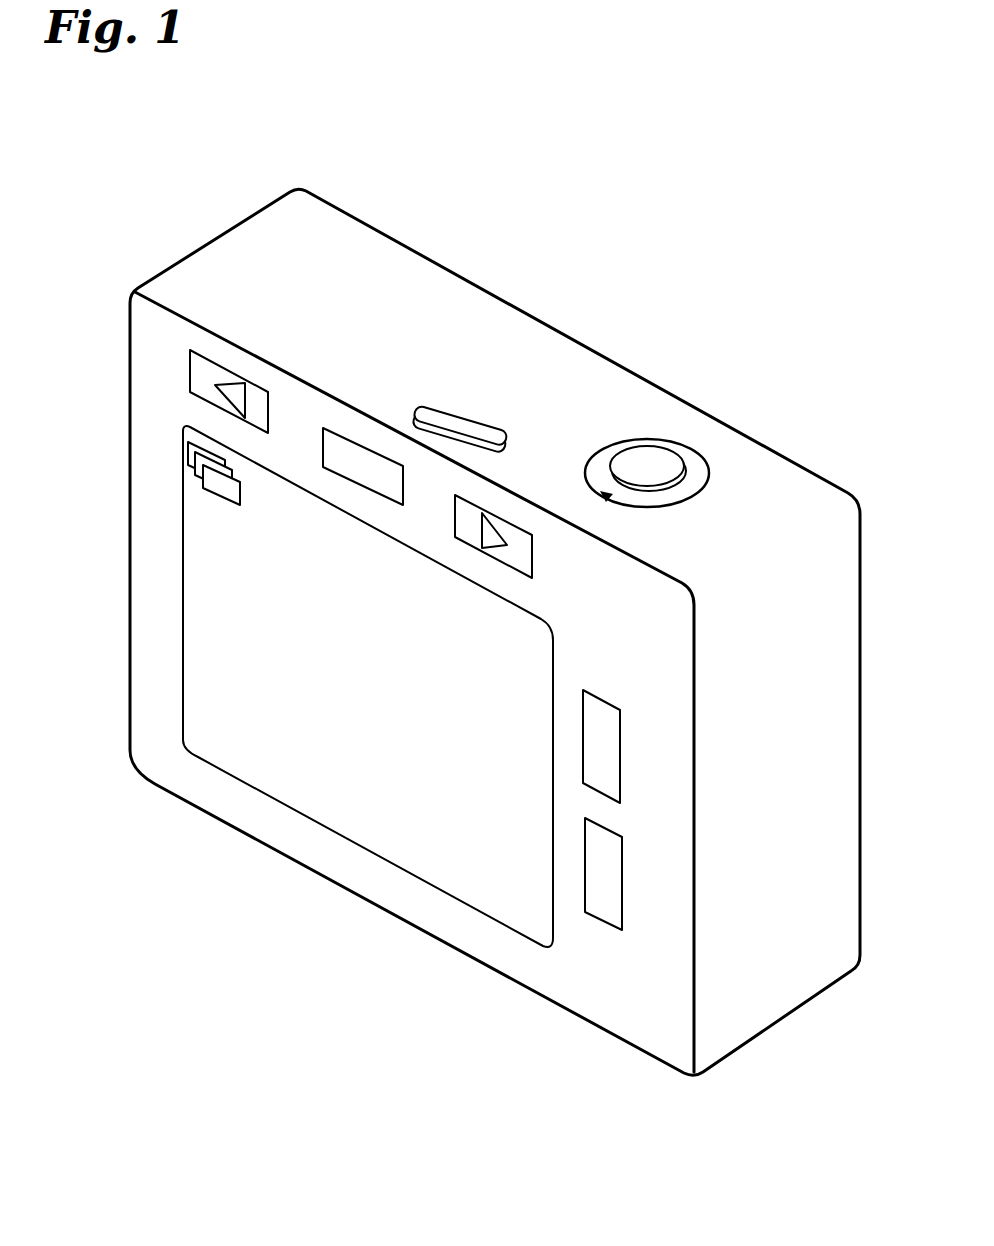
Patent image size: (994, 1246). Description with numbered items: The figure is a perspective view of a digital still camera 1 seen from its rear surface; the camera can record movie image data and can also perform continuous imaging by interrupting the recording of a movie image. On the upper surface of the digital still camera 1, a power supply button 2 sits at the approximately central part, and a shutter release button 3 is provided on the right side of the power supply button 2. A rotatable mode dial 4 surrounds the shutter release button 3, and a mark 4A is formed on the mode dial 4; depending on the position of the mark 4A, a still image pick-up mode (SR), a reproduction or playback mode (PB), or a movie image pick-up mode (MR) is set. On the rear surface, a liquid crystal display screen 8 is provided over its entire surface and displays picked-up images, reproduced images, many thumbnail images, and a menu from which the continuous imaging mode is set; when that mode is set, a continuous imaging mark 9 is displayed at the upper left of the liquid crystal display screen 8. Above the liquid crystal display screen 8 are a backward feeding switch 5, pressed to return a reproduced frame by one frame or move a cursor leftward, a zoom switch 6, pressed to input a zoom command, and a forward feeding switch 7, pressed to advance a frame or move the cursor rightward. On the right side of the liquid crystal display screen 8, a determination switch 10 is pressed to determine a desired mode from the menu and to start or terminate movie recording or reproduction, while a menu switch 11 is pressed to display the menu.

The digital still camera 1 is at (620, 318).
The power supply button 2 is at (463, 403).
The shutter release button 3 is at (650, 458).
The mode dial 4 is at (700, 464).
The mark 4A is at (605, 492).
The backward feeding switch 5 is at (190, 367).
The zoom switch 6 is at (325, 433).
The forward feeding switch 7 is at (533, 548).
The liquid crystal display screen 8 is at (555, 627).
The continuous imaging mark 9 is at (242, 489).
The determination switch 10 is at (622, 760).
The menu switch 11 is at (622, 893).